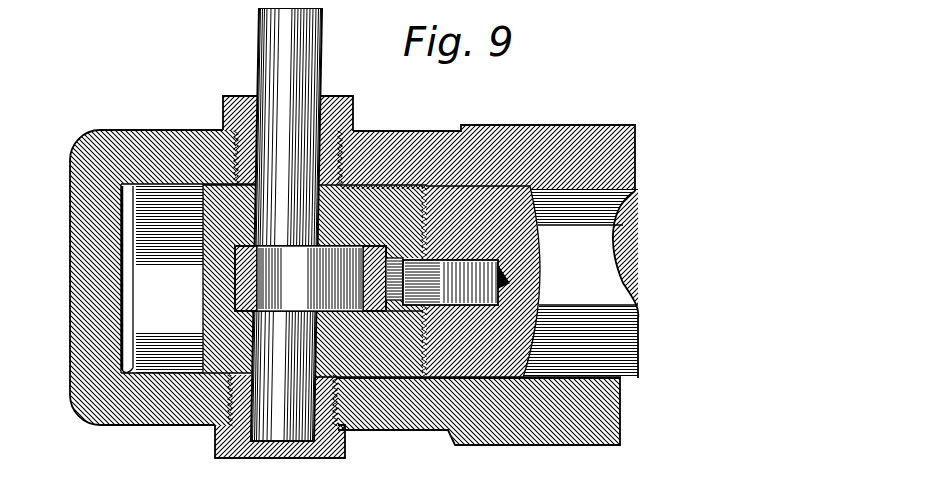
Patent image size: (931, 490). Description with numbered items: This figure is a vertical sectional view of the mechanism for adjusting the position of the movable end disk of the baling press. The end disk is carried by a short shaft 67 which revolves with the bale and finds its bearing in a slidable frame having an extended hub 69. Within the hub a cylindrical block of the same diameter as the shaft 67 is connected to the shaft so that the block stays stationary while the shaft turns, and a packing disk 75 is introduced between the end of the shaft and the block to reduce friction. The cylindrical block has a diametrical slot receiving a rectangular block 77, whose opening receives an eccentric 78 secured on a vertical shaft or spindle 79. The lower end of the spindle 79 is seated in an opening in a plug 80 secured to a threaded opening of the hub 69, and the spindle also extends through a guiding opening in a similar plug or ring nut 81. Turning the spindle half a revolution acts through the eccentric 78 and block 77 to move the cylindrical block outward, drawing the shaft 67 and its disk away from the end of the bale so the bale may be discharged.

The short shaft 67 is at (580, 283).
The extended hub 69 is at (452, 412).
The packing disk 75 is at (420, 176).
The rectangular block 77 is at (236, 292).
The eccentric 78 is at (305, 262).
The vertical shaft or spindle 79 is at (268, 34).
The plug 80 is at (280, 447).
The plug or ring nut 81 is at (338, 96).